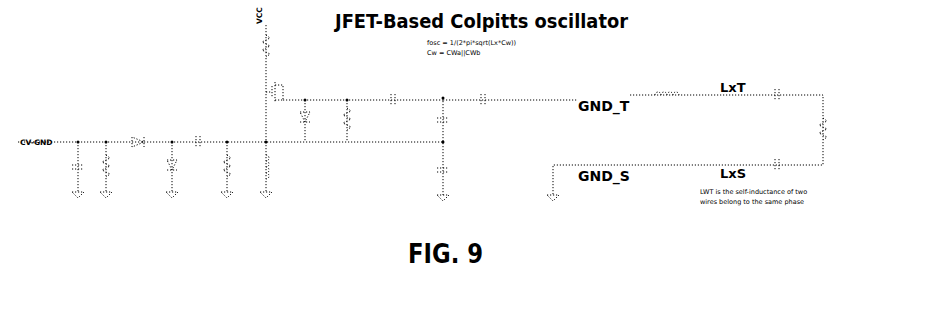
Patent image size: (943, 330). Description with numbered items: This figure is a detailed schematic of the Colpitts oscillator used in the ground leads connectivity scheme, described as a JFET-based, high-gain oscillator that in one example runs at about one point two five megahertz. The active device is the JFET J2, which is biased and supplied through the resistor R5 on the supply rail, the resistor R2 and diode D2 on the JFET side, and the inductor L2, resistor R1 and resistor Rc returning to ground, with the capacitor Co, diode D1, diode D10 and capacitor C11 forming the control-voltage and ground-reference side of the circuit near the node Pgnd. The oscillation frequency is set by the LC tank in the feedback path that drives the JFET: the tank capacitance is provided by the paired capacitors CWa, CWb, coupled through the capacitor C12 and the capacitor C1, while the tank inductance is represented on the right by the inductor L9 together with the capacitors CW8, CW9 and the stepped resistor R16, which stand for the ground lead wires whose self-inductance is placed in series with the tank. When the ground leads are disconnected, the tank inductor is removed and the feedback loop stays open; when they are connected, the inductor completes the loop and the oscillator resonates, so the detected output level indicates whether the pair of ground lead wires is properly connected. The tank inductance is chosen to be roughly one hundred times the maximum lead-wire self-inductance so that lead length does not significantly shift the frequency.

The resistor R5 is at (275, 46).
The JFET J2 (J310) J2 is at (259, 94).
The diode D2 is at (320, 114).
The resistor R2 is at (360, 119).
The capacitor C12 is at (397, 98).
The capacitor CWa is at (435, 120).
The capacitor CWb is at (435, 170).
The capacitor C1 is at (489, 98).
The capacitor Co is at (72, 170).
The resistor Rc is at (118, 166).
The diode D1 is at (141, 142).
The diode D10 is at (162, 169).
The capacitor C11 is at (200, 142).
The resistor R1 is at (239, 166).
The inductor L2 is at (277, 167).
The inductor L9 is at (668, 96).
The capacitor CW8 is at (780, 98).
The capacitor CW8 (lower) CW9 is at (780, 169).
The resistor R16 is at (869, 135).
The Pgnd node Pgnd is at (175, 137).